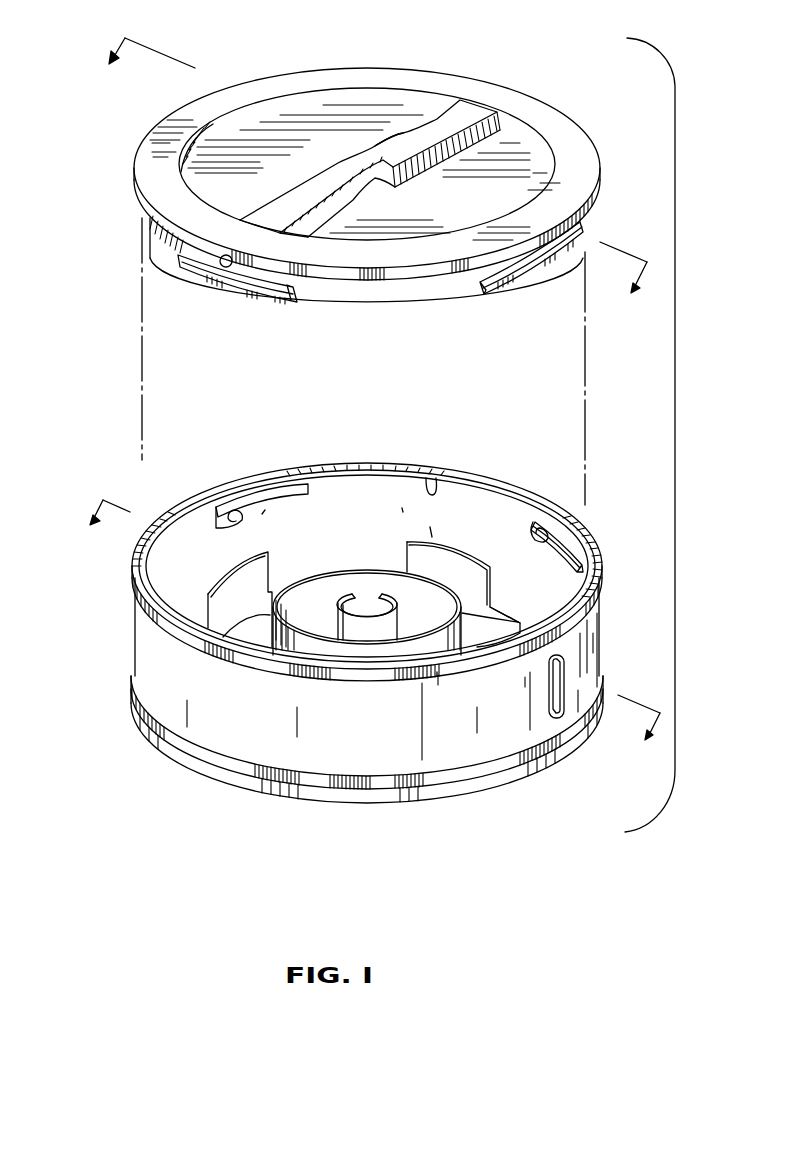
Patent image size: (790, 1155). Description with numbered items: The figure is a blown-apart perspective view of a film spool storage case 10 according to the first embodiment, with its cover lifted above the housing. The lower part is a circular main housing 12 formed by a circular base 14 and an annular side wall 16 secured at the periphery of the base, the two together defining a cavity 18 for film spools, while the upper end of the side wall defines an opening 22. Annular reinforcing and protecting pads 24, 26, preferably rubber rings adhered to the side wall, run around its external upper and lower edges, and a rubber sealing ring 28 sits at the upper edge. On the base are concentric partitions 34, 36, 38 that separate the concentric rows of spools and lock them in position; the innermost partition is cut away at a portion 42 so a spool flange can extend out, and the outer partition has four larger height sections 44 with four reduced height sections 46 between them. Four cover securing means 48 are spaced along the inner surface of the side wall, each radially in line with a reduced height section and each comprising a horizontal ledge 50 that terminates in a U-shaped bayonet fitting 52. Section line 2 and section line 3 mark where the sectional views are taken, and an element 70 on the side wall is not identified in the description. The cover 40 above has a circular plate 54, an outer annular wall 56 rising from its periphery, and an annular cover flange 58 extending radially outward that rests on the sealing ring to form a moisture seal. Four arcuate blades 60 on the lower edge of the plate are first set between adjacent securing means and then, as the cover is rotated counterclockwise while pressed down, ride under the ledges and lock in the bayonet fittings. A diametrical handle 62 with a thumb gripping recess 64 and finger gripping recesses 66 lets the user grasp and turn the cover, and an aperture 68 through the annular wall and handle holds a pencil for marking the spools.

The section line 2- 2 is at (369, 271).
The section line 3- 3 is at (364, 635).
The film spool storage case 10 is at (112, 440).
The circular main housing 12 is at (368, 649).
The circular base 14 is at (250, 640).
The annular side wall 16 is at (197, 730).
The cavity 18 is at (402, 508).
The opening 22 is at (437, 482).
The annular reinforcing and protecting pad 24 is at (437, 672).
The annular reinforcing and protecting pad 26 is at (490, 785).
The rubber sealing ring 28 is at (505, 490).
The concentric partition 34 is at (432, 537).
The concentric partition 36 is at (325, 582).
The concentric partition 38 is at (355, 633).
The cover 40 is at (329, 52).
The cut away portion 42 is at (357, 605).
The larger height section 44 is at (248, 563).
The reduced height section 46 is at (505, 598).
The cover securing means 48 is at (263, 514).
The horizontal ledge 50 is at (260, 494).
The U-shaped bayonet fitting 52 is at (215, 520).
The circular plate 54 is at (497, 112).
The outer annular wall 56 is at (336, 293).
The annular cover flange 58 is at (148, 165).
The arcuate blade 60 is at (228, 292).
The diametrical handle 62 is at (286, 197).
The thumb gripping recess 64 is at (376, 182).
The finger gripping recess 66 is at (393, 143).
The aperture 68 is at (224, 268).
The slot 70 is at (562, 722).